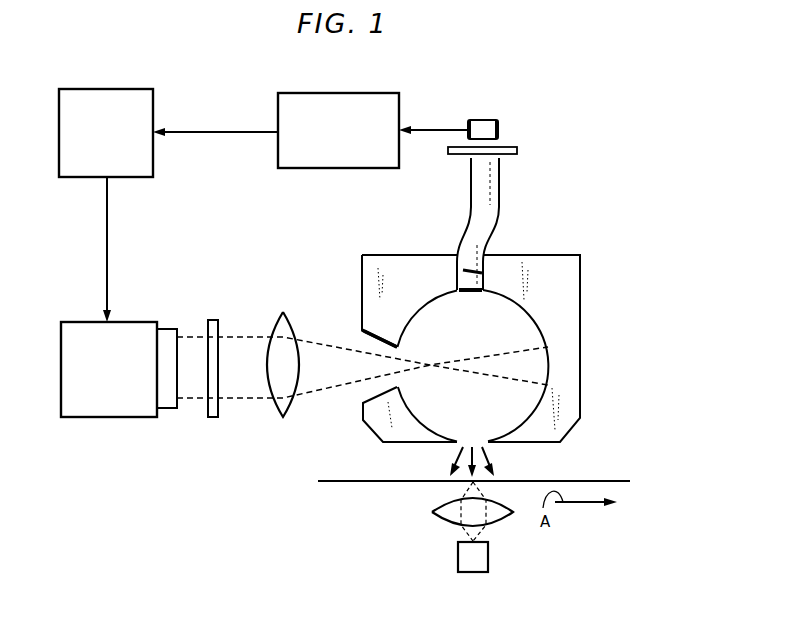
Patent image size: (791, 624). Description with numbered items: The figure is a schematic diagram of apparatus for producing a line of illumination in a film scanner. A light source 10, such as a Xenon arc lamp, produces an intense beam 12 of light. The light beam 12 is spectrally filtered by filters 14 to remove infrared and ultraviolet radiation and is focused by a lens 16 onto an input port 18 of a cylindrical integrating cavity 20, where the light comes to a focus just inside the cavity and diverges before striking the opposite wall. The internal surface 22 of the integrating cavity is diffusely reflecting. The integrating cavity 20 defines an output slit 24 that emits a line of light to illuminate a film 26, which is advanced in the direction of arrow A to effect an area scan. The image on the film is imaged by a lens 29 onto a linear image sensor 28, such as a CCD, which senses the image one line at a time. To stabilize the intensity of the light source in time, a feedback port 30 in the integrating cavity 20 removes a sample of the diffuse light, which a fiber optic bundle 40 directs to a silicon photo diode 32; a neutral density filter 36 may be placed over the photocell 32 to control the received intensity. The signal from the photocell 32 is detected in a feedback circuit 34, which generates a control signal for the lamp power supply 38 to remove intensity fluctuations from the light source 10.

The light source 10 is at (138, 322).
The beam of light 12 is at (246, 332).
The filters 14 is at (214, 320).
The lens 16 is at (276, 313).
The input port 18 is at (366, 343).
The cylindrical integrating cavity 20 is at (557, 278).
The internal surface 22 is at (547, 370).
The output slit 24 is at (493, 462).
The film 26 is at (624, 480).
The linear image sensor 28 is at (488, 553).
The lens 29 is at (447, 512).
The feedback port 30 is at (472, 271).
The silicon photo diode 32 is at (498, 133).
The feedback circuit 34 is at (366, 93).
The neutral density filter 36 is at (517, 150).
The lamp power supply 38 is at (127, 89).
The fiber optic bundle 40 is at (499, 186).